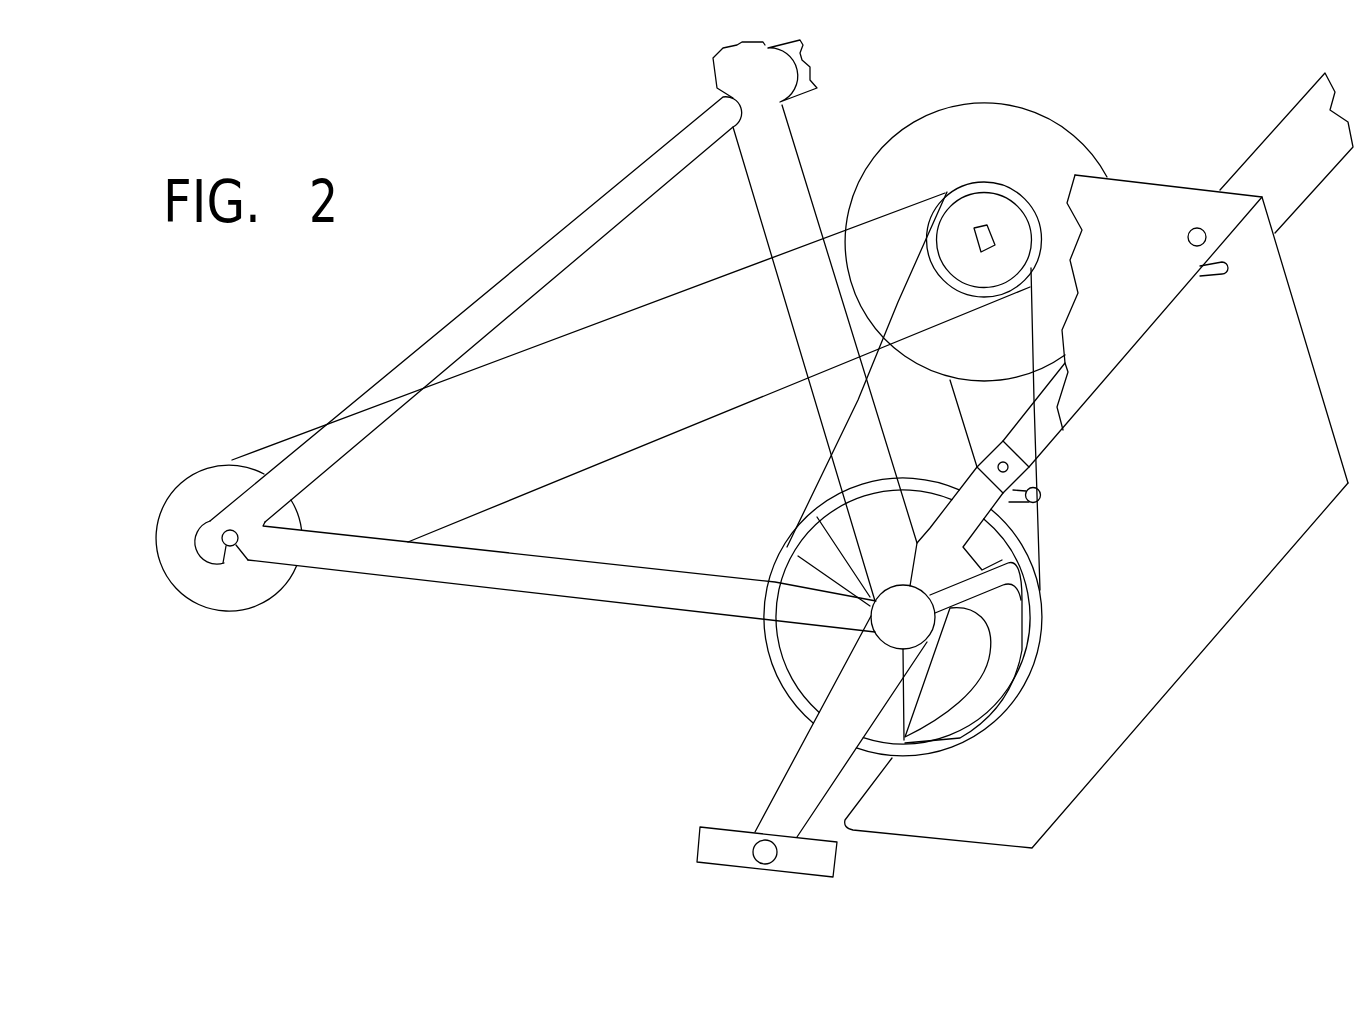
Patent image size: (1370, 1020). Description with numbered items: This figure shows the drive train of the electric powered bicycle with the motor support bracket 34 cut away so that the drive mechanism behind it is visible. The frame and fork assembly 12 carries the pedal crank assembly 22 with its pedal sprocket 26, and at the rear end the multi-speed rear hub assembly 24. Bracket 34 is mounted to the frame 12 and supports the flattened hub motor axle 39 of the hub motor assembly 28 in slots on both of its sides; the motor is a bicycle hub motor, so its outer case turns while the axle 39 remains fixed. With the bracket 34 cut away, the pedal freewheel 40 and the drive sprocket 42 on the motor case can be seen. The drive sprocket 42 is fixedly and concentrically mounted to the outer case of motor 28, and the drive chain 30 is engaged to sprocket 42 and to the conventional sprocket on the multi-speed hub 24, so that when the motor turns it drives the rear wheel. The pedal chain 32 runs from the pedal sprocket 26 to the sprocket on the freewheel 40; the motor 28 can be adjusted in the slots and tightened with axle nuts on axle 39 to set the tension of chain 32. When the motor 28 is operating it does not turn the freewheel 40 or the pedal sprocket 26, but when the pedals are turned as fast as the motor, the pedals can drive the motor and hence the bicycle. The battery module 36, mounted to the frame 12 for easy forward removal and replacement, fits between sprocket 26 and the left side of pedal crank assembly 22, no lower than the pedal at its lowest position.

The frame and fork assembly 12 is at (645, 170).
The pedal crank assembly 22 is at (792, 802).
The multi-speed rear hub assembly 24 is at (225, 595).
The pedal sprocket 26 is at (777, 653).
The hub motor assembly 28 is at (924, 169).
The drive chain 30 is at (543, 343).
The pedal chain 32 is at (1036, 536).
The motor support bracket 34 is at (1125, 200).
The battery module 36 is at (1218, 457).
The hub motor axle 39 is at (978, 226).
The pedal freewheel 40 is at (993, 208).
The drive sprocket 42 is at (1017, 197).